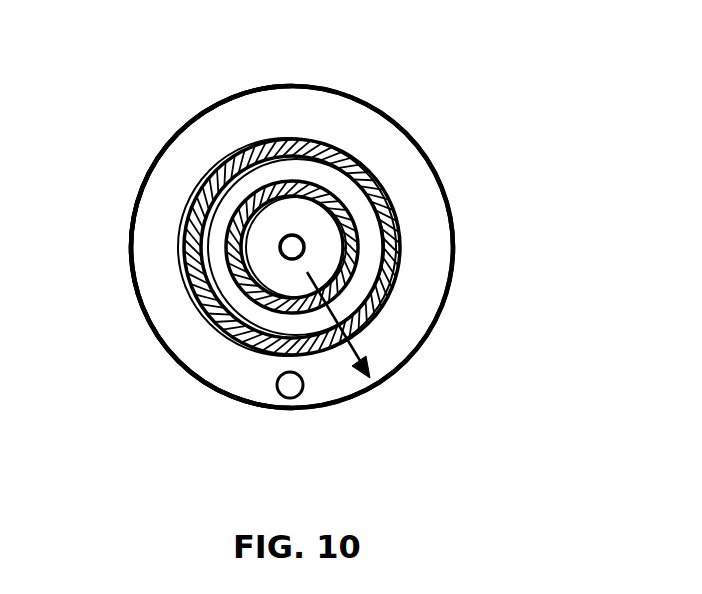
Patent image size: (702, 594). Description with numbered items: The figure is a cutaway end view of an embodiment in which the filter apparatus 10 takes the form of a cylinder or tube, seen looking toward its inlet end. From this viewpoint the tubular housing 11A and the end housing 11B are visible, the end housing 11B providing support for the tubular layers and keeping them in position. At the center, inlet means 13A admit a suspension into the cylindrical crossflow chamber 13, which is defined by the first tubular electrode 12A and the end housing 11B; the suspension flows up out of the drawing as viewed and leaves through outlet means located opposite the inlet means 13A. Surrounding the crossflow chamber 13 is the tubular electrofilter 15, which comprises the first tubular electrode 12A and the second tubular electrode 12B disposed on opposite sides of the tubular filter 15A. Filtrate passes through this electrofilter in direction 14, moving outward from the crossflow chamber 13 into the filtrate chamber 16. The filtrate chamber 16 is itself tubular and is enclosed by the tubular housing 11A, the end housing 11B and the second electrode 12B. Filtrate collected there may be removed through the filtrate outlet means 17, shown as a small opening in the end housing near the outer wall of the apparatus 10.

The filter apparatus 10 is at (389, 100).
The tubular housing 11A is at (287, 85).
The end housing 11B is at (262, 270).
The first tubular electrode 12A is at (232, 207).
The second tubular electrode 12B is at (226, 244).
The crossflow chamber 13 is at (258, 326).
The inlet means 13A is at (283, 235).
The filtrate flow direction 14 is at (330, 340).
The tubular electrofilter 15 is at (401, 191).
The tubular filter 15A is at (366, 266).
The filtrate chamber 16 is at (441, 308).
The filtrate outlet means 17 is at (306, 380).